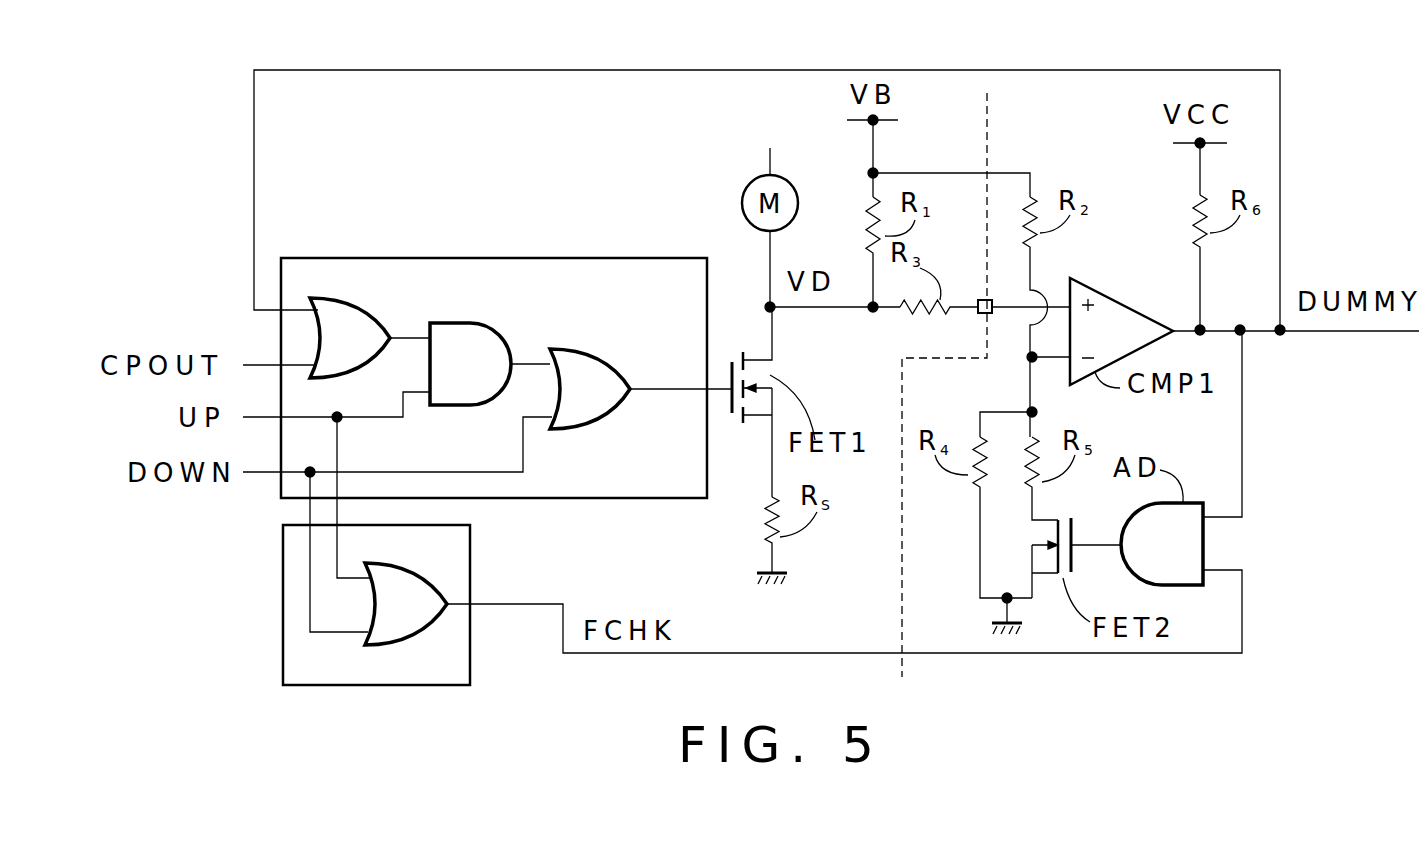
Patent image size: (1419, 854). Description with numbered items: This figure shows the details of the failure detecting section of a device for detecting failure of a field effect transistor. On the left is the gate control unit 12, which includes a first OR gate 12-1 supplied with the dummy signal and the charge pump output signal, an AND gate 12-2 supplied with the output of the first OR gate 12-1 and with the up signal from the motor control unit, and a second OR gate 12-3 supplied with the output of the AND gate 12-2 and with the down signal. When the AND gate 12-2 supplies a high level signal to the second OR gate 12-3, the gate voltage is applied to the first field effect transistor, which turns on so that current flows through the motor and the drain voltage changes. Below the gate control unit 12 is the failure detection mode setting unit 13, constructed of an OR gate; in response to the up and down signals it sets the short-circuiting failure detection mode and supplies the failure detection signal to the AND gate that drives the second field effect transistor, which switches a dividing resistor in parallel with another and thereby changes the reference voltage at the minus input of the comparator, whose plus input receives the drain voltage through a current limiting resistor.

The gate control unit 12 is at (642, 258).
The OR gate 12-1 is at (338, 298).
The AND gate 12-2 is at (475, 323).
The OR gate 12-3 is at (572, 429).
The failure detection mode setting unit 13 is at (470, 540).